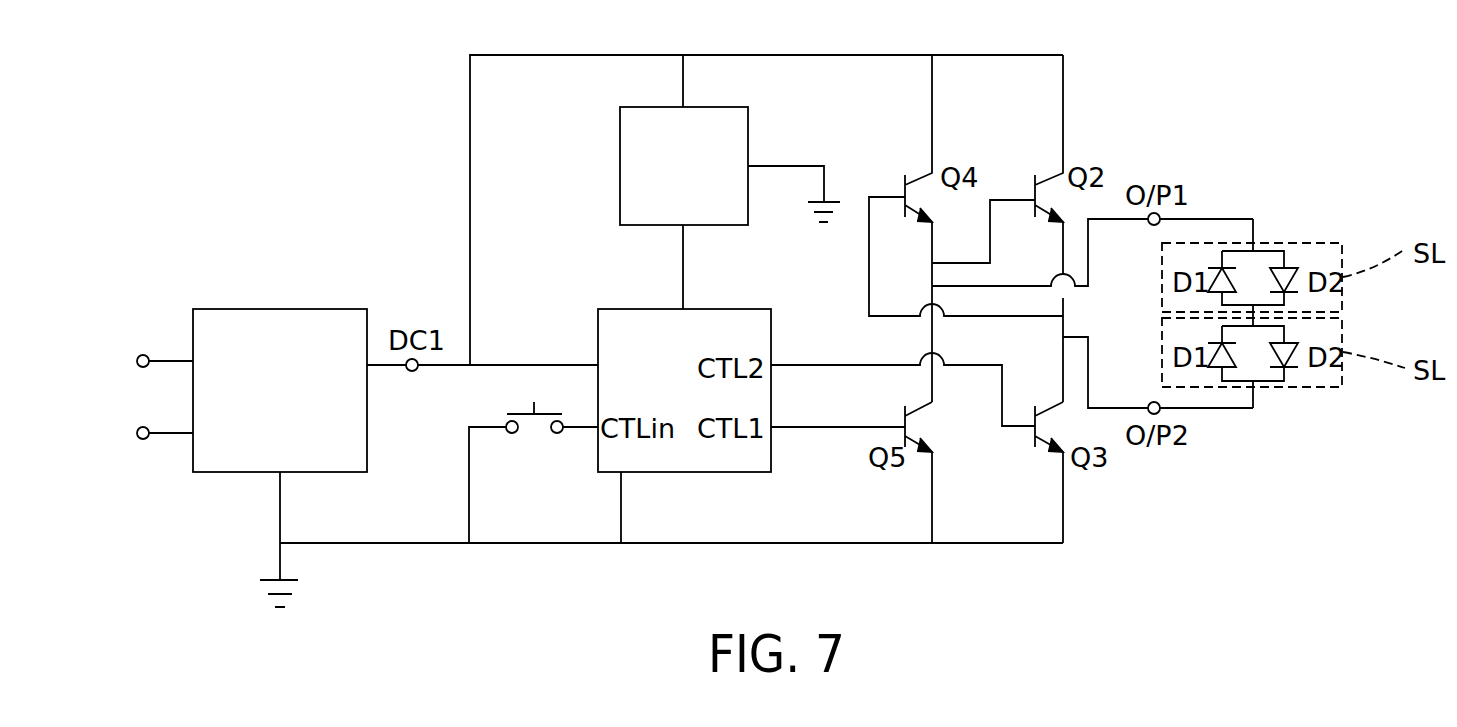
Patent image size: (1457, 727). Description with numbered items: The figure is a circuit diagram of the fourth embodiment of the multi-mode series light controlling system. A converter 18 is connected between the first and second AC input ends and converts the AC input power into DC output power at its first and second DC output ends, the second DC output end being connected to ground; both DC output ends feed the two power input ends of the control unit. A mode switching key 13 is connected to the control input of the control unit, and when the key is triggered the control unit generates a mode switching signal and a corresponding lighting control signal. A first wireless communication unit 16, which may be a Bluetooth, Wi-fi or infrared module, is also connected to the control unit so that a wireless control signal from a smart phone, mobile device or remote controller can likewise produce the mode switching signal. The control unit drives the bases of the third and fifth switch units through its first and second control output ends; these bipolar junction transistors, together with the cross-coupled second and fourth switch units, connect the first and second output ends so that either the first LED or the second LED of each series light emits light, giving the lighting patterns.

The converter 18 is at (278, 309).
The first wireless communication unit 16 is at (705, 107).
The mode switching key 13 is at (490, 417).